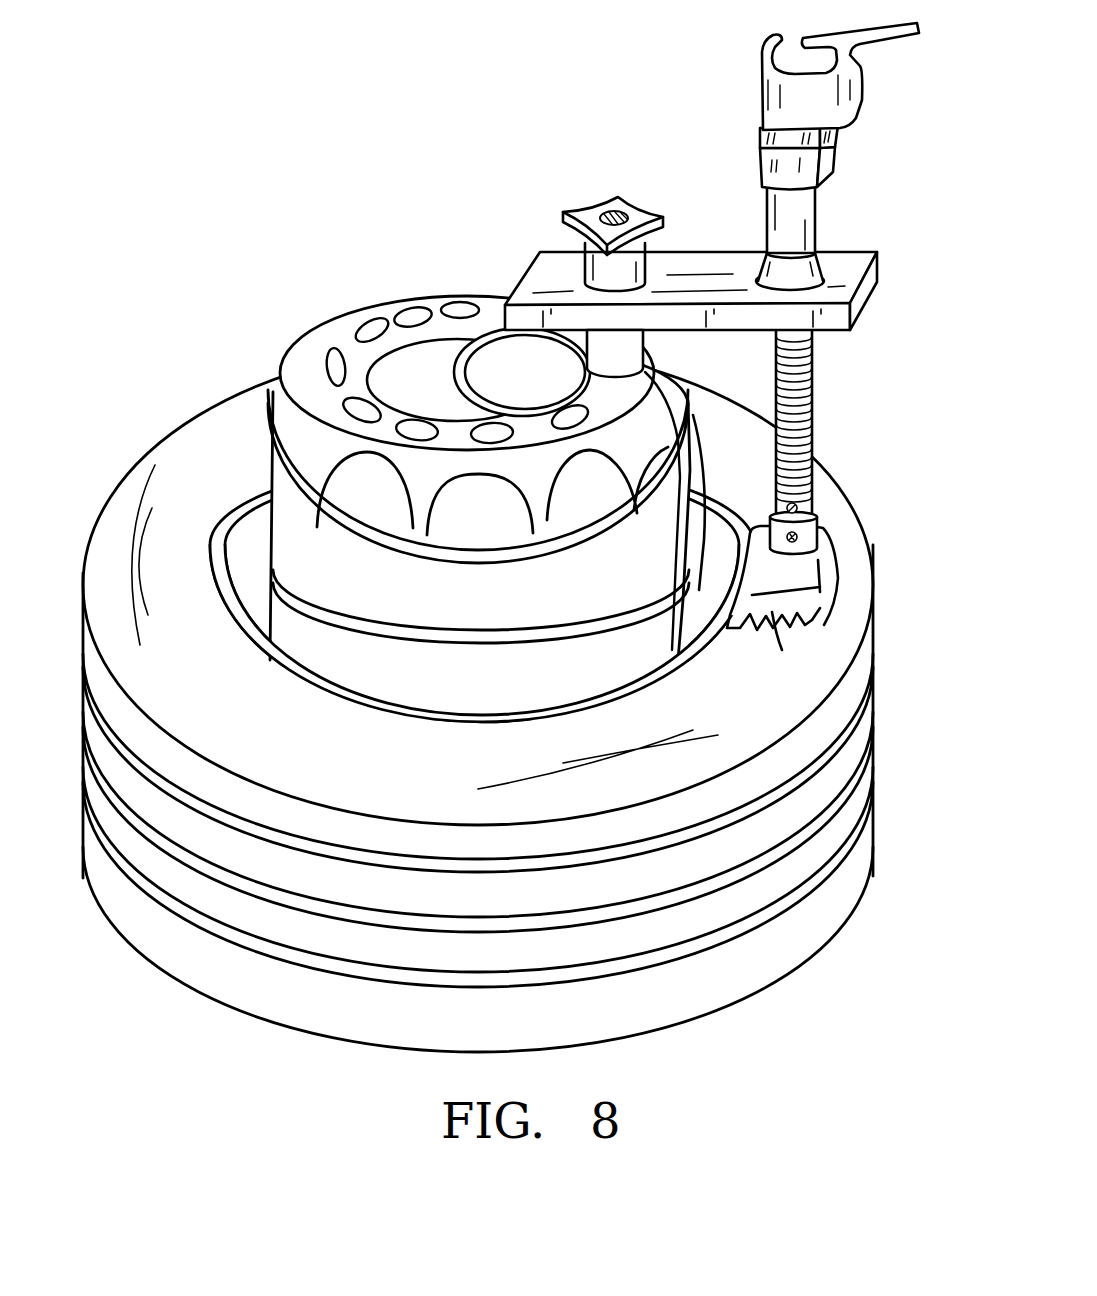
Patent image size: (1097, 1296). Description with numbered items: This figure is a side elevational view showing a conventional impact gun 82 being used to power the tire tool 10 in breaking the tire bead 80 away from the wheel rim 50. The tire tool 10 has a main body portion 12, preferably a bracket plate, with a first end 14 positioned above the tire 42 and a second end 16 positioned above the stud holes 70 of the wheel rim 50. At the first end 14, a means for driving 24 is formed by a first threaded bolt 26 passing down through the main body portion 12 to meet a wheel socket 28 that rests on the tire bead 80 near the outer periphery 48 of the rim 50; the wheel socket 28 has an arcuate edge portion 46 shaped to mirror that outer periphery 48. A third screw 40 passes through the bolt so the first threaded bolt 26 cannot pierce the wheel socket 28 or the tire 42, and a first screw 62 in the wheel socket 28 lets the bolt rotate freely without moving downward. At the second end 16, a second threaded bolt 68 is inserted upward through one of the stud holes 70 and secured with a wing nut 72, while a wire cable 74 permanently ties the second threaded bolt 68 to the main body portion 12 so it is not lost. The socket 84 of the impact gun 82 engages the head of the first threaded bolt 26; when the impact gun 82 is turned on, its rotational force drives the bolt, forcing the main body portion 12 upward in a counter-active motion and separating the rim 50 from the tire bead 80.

The tire tool 10 is at (523, 531).
The main body portion 12 is at (727, 266).
The first end 14 is at (706, 354).
The second end 16 is at (662, 256).
The means for driving 24 is at (837, 508).
The first threaded bolt 26 is at (812, 360).
The wheel socket 28 is at (782, 650).
The third screw 40 is at (800, 510).
The tire 42 is at (862, 801).
The arcuate edge portion 46 is at (733, 580).
The outer periphery 48 is at (712, 424).
The wheel rim 50 is at (460, 487).
The first screw 62 is at (822, 532).
The second threaded bolt 68 is at (620, 212).
The stud holes 70 is at (332, 355).
The wing nut 72 is at (600, 208).
The wire cable 74 is at (457, 342).
The tire bead 80 is at (668, 692).
The impact gun 82 is at (767, 90).
The socket 84 is at (773, 210).